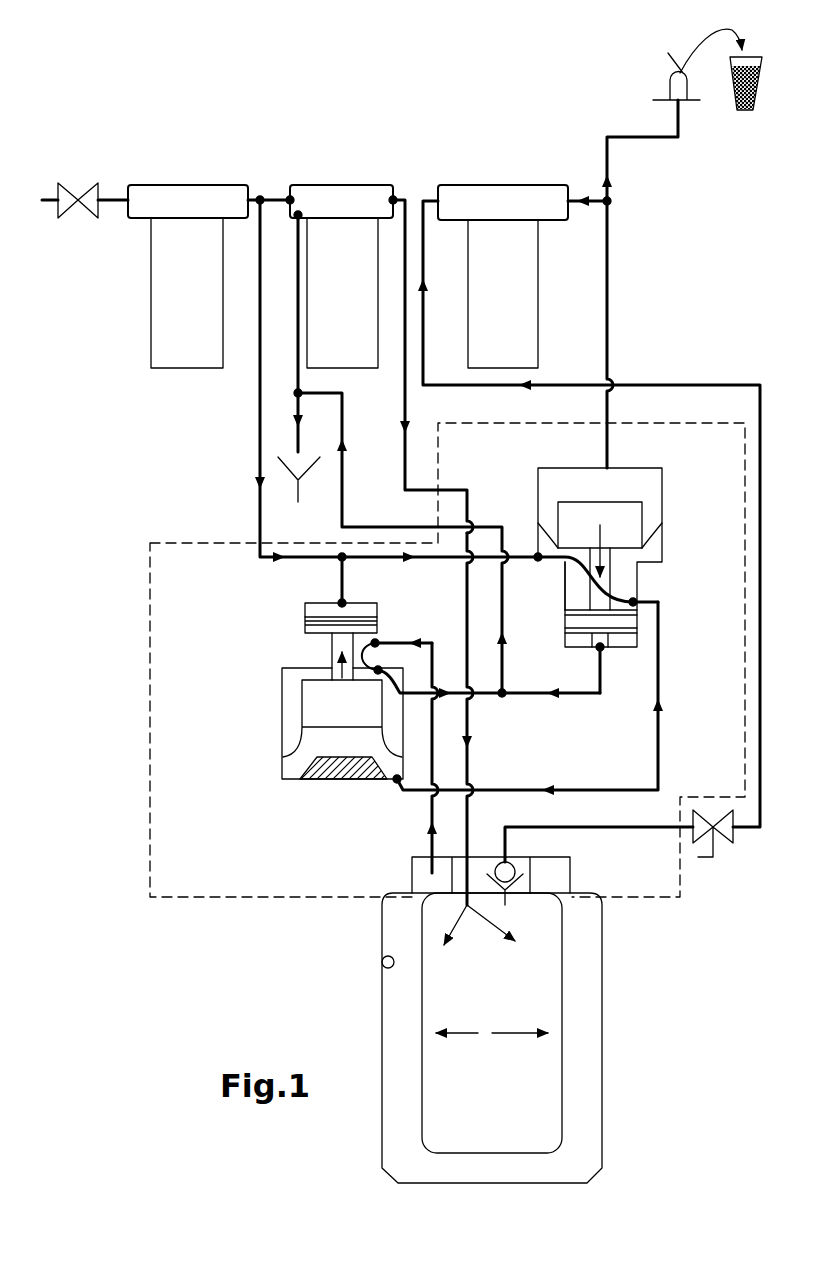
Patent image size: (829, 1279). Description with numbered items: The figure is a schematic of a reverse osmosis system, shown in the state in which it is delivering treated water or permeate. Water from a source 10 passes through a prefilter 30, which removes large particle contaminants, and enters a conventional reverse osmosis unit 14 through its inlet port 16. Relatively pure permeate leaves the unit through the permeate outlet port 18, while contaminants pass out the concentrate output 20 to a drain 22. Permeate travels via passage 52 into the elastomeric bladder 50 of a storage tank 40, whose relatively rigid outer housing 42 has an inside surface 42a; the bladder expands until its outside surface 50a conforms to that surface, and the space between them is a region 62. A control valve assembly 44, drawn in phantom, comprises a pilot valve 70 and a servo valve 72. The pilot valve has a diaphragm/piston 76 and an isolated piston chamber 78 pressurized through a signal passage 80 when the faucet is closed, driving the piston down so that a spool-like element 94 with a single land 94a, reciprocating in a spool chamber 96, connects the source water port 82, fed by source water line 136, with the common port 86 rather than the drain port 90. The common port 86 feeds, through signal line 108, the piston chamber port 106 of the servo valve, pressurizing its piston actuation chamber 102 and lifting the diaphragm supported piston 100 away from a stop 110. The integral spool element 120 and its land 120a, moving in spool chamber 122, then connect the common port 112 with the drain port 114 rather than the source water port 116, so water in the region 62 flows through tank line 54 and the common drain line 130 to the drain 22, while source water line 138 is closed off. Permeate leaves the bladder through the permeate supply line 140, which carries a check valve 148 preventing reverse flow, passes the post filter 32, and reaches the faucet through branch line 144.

The source of water 10 is at (45, 176).
The reverse osmosis unit 14 is at (329, 341).
The inlet port 16 is at (285, 190).
The permeate outlet port 18 is at (406, 186).
The concentrate output 20 is at (295, 224).
The drain 22 is at (331, 504).
The prefilter 30 is at (173, 334).
The post filter 32 is at (490, 336).
The storage tank 40 is at (644, 987).
The outer housing 42 is at (603, 945).
The inside surface 42a is at (382, 963).
The control valve assembly 44 is at (150, 672).
The bladder 50 is at (569, 1081).
The outside surface 50a is at (563, 1107).
The passage 52 is at (468, 767).
The tank line 54 is at (430, 808).
The region 62 is at (390, 1014).
The pilot valve 70 is at (668, 492).
The servo valve 72 is at (268, 718).
The diaphragm/piston 76 is at (568, 532).
The piston chamber 78 is at (561, 493).
The signal passage 80 is at (610, 326).
The source water port 82 is at (548, 561).
The common port 86 is at (640, 599).
The drain port 90 is at (604, 651).
The spool-like element 94 is at (624, 583).
The land 94a is at (626, 623).
The spool chamber 96 is at (567, 592).
The diaphragm supported piston 100 is at (320, 700).
The piston actuation chamber 102 is at (322, 751).
The piston chamber port 106 is at (394, 786).
The signal line 108 is at (563, 787).
The stop 110 is at (322, 770).
The common port 112 is at (378, 640).
The drain port 114 is at (377, 673).
The source water port 116 is at (346, 600).
The spool element 120 is at (328, 660).
The land 120a is at (305, 628).
The spool chamber 122 is at (305, 640).
The common drain line 130 is at (378, 526).
The source water line 136 is at (259, 455).
The source water line 138 is at (434, 728).
The permeate supply line 140 is at (763, 657).
The branch line 144 is at (582, 198).
The check valve 148 is at (530, 856).